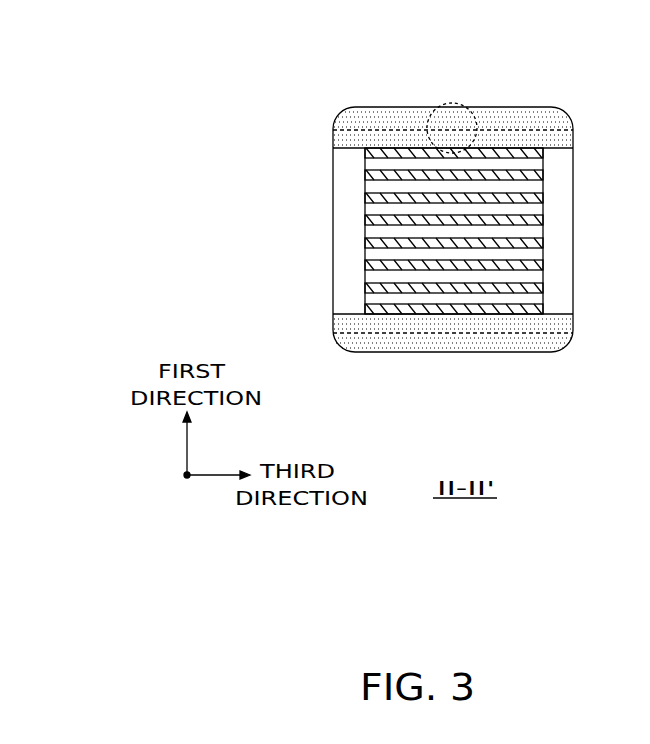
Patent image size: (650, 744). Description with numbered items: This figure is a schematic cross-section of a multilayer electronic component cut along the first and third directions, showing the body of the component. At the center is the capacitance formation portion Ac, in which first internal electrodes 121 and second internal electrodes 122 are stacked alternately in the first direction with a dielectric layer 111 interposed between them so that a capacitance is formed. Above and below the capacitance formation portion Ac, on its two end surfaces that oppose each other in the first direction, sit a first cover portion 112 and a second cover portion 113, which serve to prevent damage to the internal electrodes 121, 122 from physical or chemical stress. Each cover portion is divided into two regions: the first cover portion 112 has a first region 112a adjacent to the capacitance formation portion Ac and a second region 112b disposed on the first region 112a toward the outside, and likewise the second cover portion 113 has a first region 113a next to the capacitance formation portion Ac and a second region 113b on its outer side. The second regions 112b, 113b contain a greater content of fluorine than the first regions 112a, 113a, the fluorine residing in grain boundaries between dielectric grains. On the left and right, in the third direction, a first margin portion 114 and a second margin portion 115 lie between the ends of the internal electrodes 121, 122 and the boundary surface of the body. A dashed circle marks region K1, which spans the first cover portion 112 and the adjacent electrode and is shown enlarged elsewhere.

The dielectric layer 111 is at (545, 160).
The first cover portion 112 is at (474, 72).
The first region of the first cover portion 112a is at (506, 140).
The second region of the first cover portion 112b is at (552, 125).
The second cover portion 113 is at (474, 393).
The first region of the second cover portion 113a is at (505, 320).
The second region of the second cover portion 113b is at (553, 337).
The first margin portion 114 is at (340, 258).
The second margin portion 115 is at (573, 262).
The first internal electrode 121 is at (543, 152).
The second internal electrode 122 is at (543, 176).
The capacitance formation portion Ac is at (362, 235).
The region K1 is at (447, 104).